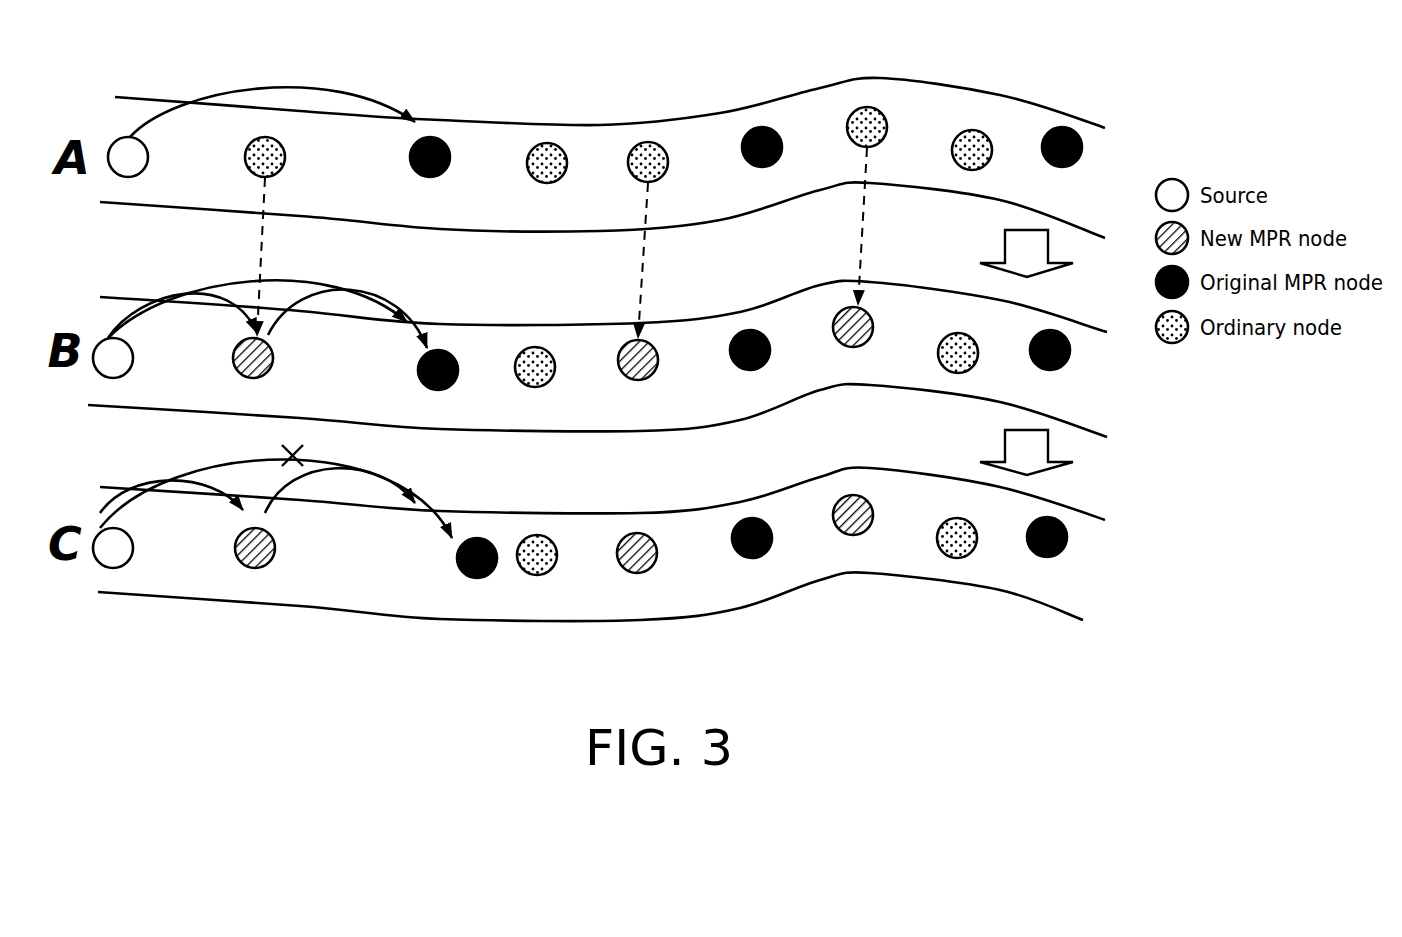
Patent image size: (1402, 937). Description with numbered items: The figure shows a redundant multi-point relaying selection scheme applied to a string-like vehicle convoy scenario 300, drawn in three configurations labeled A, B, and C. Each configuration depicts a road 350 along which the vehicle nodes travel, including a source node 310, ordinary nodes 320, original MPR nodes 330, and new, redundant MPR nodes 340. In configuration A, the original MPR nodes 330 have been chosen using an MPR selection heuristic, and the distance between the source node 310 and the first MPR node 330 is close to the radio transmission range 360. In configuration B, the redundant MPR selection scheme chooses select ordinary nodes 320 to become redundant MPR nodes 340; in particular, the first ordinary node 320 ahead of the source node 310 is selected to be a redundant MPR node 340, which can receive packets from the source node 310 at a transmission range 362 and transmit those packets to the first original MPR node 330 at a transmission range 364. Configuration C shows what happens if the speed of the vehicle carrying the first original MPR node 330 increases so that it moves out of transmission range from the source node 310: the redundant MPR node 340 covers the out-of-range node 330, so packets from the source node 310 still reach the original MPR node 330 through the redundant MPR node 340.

The string-like vehicle convoy scenario 300 is at (588, 68).
The source node 310 is at (137, 175).
The ordinary node 320 is at (271, 177).
The original MPR node 330 is at (437, 176).
The new (redundant) MPR node 340 is at (259, 377).
The road 350 is at (897, 78).
The radio transmission range 360 is at (273, 78).
The transmission range 362 is at (170, 290).
The transmission range 364 is at (353, 280).